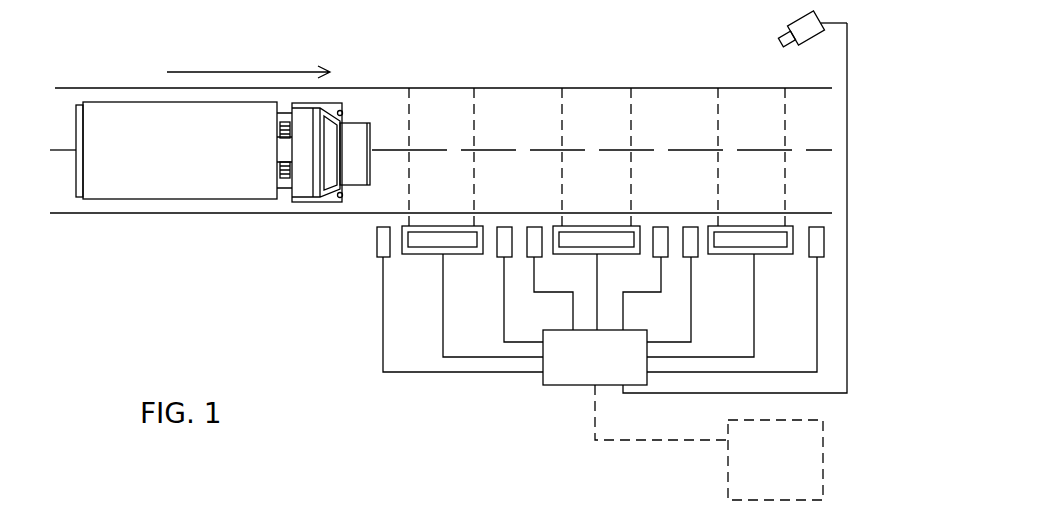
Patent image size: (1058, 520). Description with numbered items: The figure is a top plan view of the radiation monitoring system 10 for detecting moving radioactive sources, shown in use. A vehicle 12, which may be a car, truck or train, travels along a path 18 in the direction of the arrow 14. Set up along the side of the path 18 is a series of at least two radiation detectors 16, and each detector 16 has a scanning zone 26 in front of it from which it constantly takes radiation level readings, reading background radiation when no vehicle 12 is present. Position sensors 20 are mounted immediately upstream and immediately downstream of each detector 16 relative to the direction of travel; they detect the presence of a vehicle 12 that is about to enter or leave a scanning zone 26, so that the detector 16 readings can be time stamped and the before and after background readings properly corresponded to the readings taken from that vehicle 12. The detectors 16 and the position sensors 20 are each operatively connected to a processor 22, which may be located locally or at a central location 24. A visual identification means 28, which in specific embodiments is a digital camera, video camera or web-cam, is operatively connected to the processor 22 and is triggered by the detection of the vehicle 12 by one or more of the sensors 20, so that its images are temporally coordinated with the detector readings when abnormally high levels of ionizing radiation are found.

The radiation monitoring system 10 is at (461, 421).
The vehicle 12 is at (158, 202).
The arrow 14 is at (247, 72).
The radiation detectors 16 is at (753, 237).
The path 18 is at (523, 88).
The position sensor 20 is at (377, 245).
The processor 22 is at (600, 378).
The central location 24 is at (782, 487).
The scanning zone 26 is at (438, 105).
The visual identification means 28 is at (790, 23).